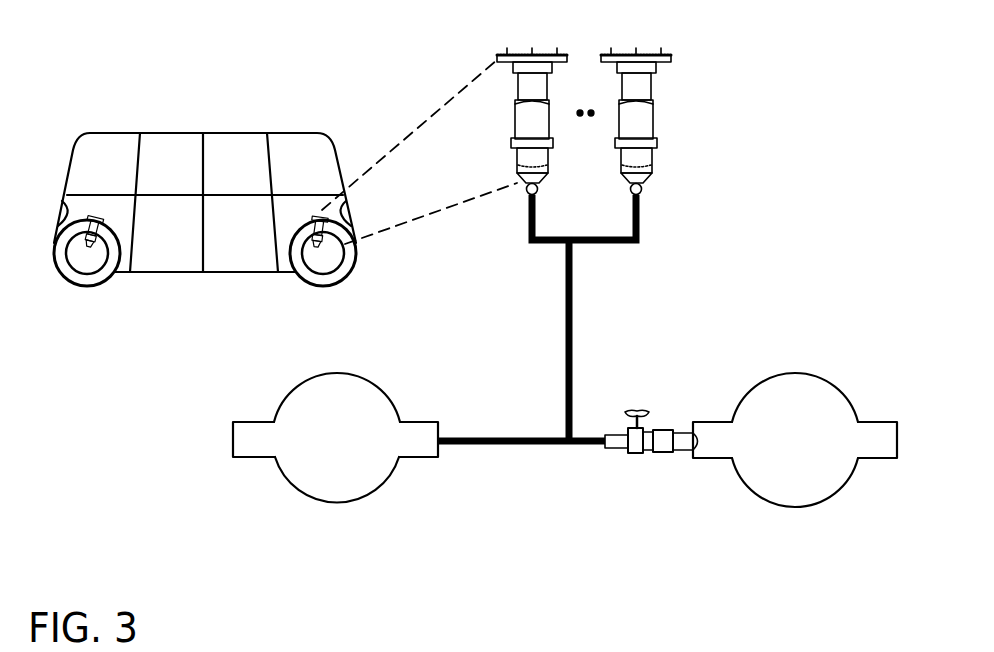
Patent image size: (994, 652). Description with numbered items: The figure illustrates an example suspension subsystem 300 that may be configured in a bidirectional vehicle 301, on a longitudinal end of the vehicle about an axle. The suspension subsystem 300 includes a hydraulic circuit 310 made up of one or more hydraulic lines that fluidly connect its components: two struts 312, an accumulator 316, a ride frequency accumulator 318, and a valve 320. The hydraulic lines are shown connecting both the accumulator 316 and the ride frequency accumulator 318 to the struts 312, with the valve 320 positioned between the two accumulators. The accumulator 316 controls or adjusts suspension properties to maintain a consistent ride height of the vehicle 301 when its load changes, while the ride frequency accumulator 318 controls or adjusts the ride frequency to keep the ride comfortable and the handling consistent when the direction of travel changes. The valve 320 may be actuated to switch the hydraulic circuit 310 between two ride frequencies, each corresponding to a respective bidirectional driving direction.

The suspension subsystem 300 is at (118, 38).
The bidirectional vehicle 301 is at (223, 133).
The strut(s) 312 is at (656, 163).
The hydraulic circuit 310 is at (565, 338).
The accumulator 316 is at (321, 466).
The ride frequency accumulator 318 is at (779, 482).
The valve 320 is at (636, 410).